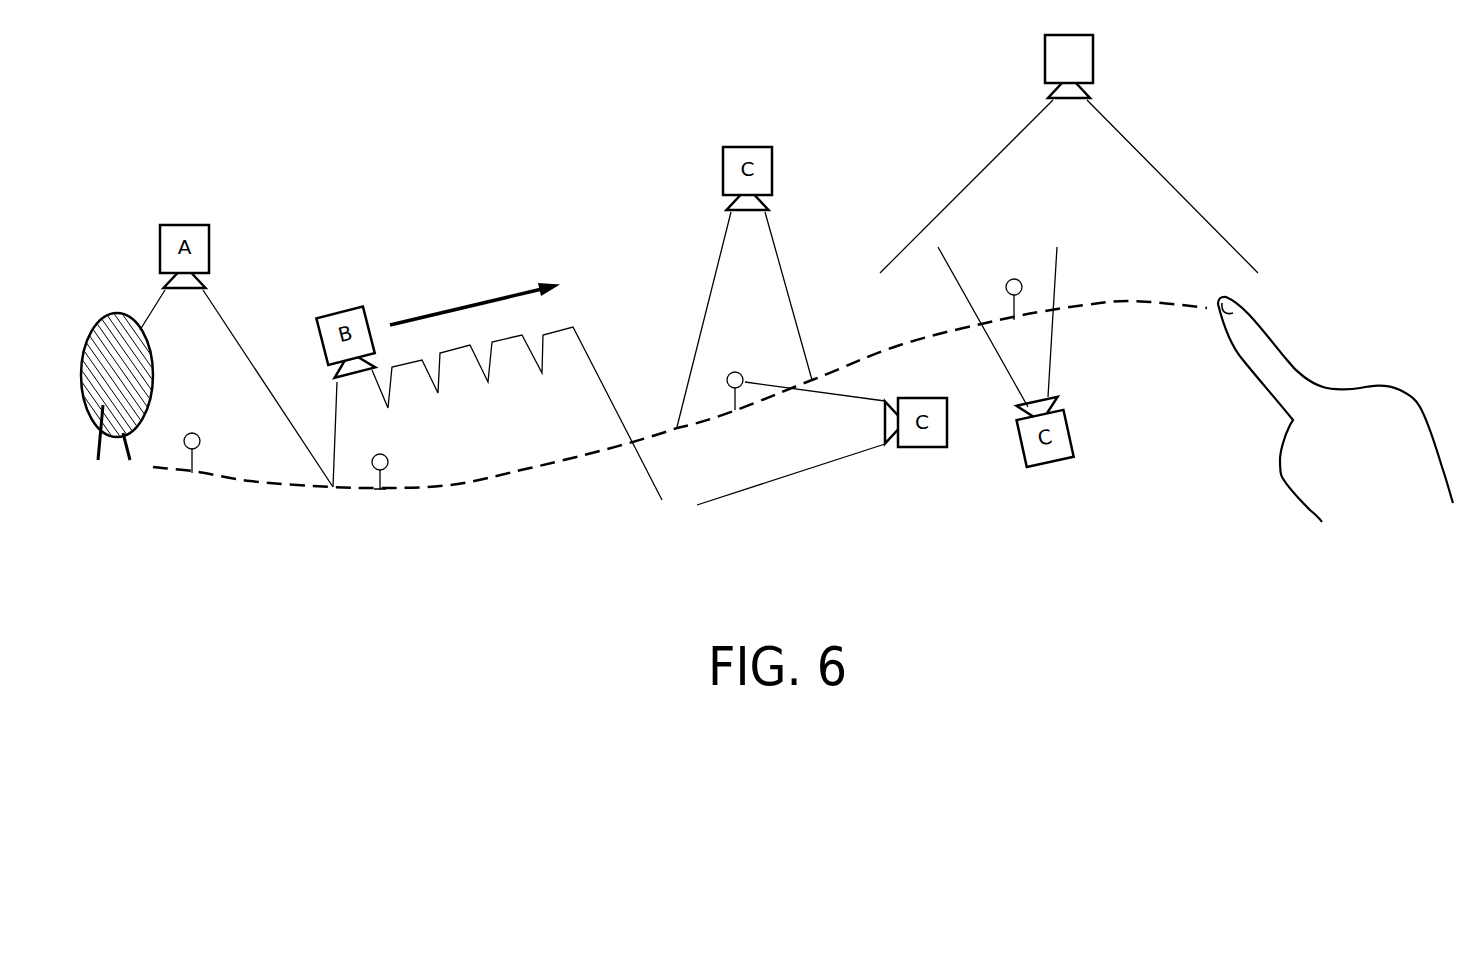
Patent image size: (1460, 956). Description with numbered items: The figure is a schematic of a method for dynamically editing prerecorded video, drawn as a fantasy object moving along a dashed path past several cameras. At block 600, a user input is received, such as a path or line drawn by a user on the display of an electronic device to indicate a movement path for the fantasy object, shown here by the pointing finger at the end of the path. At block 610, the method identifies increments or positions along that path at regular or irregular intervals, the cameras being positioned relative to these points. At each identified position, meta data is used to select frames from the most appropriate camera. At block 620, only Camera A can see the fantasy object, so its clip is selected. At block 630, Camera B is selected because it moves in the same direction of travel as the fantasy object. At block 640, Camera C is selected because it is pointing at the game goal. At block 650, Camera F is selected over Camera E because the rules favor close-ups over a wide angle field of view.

The receiving a user input 600 is at (1220, 288).
The identifying positions along the path 610 is at (1102, 48).
The selecting Camera A 620 is at (187, 480).
The selecting Camera B 630 is at (383, 496).
The selecting Camera C 640 is at (735, 364).
The selecting Camera F over Camera E 650 is at (1015, 267).